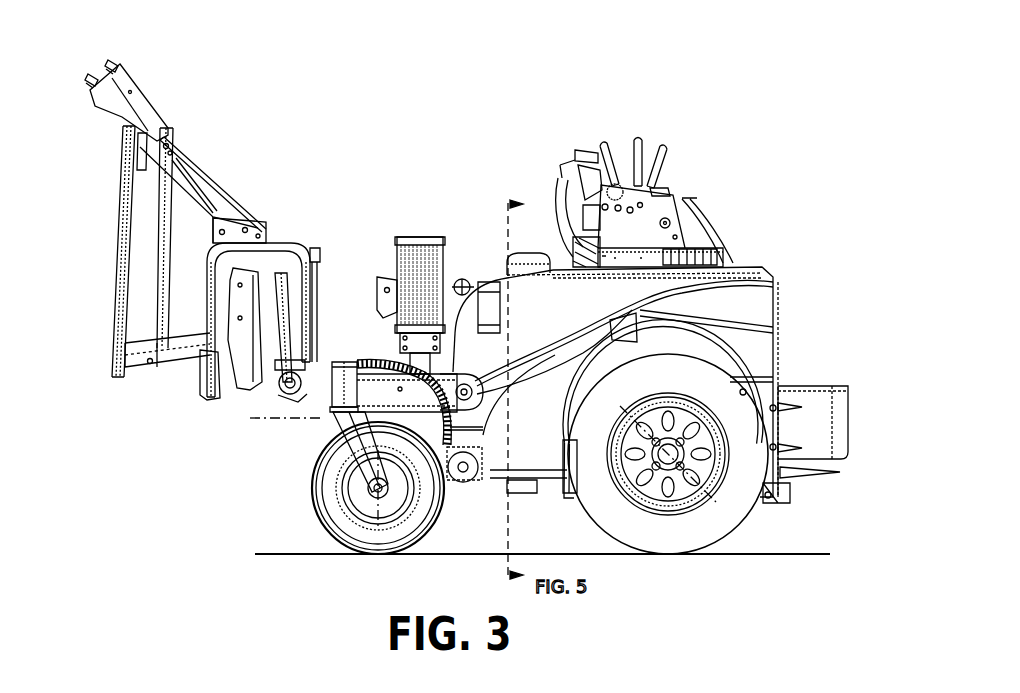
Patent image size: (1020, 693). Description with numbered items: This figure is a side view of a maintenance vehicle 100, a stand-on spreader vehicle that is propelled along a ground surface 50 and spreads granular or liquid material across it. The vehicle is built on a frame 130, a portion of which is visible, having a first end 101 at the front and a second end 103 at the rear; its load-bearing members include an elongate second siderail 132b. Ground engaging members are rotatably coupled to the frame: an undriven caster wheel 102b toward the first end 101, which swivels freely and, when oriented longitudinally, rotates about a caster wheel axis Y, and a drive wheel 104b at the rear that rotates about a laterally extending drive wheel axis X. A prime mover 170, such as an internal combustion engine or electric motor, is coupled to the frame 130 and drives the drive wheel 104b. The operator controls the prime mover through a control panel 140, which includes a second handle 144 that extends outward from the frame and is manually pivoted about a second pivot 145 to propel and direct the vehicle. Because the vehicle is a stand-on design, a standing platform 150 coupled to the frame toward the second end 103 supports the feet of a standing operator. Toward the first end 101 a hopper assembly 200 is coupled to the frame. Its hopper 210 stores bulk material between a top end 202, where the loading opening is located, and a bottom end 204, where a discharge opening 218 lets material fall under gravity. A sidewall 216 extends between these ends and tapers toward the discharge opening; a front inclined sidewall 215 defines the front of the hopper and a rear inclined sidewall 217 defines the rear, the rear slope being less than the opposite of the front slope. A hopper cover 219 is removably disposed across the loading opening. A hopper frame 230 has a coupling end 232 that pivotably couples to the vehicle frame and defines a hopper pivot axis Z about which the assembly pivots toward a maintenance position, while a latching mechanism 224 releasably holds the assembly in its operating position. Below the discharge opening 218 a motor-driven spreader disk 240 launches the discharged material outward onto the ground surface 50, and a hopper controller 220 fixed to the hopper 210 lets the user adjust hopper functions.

The ground surface 50 is at (305, 553).
The maintenance vehicle 100 is at (455, 126).
The first end 101 is at (230, 461).
The caster wheel 102b is at (324, 512).
The second end 103 is at (820, 521).
The drive wheel 104b is at (697, 538).
The vehicle frame 130 is at (368, 392).
The second siderail 132b is at (470, 476).
The control panel 140 is at (661, 121).
The second handle 144 is at (637, 157).
The second pivot 145 is at (633, 210).
The standing platform 150 is at (783, 467).
The prime mover 170 is at (495, 254).
The hopper assembly 200 is at (205, 120).
The top end 202 is at (88, 262).
The bottom end 204 is at (262, 226).
The hopper 210 is at (185, 192).
The front inclined sidewall 215 is at (165, 367).
The sidewall 216 is at (135, 332).
The rear inclined sidewall 217 is at (225, 213).
The discharge opening 218 is at (274, 305).
The hopper cover 219 is at (125, 222).
The hopper controller 220 is at (97, 88).
The latching mechanism 224 is at (318, 245).
The hopper frame 230 is at (222, 297).
The coupling end 232 is at (290, 392).
The spreader disk 240 is at (273, 341).
The drive wheel axis X is at (674, 456).
The caster wheel axis Y is at (375, 493).
The hopper pivot axis Z is at (282, 395).